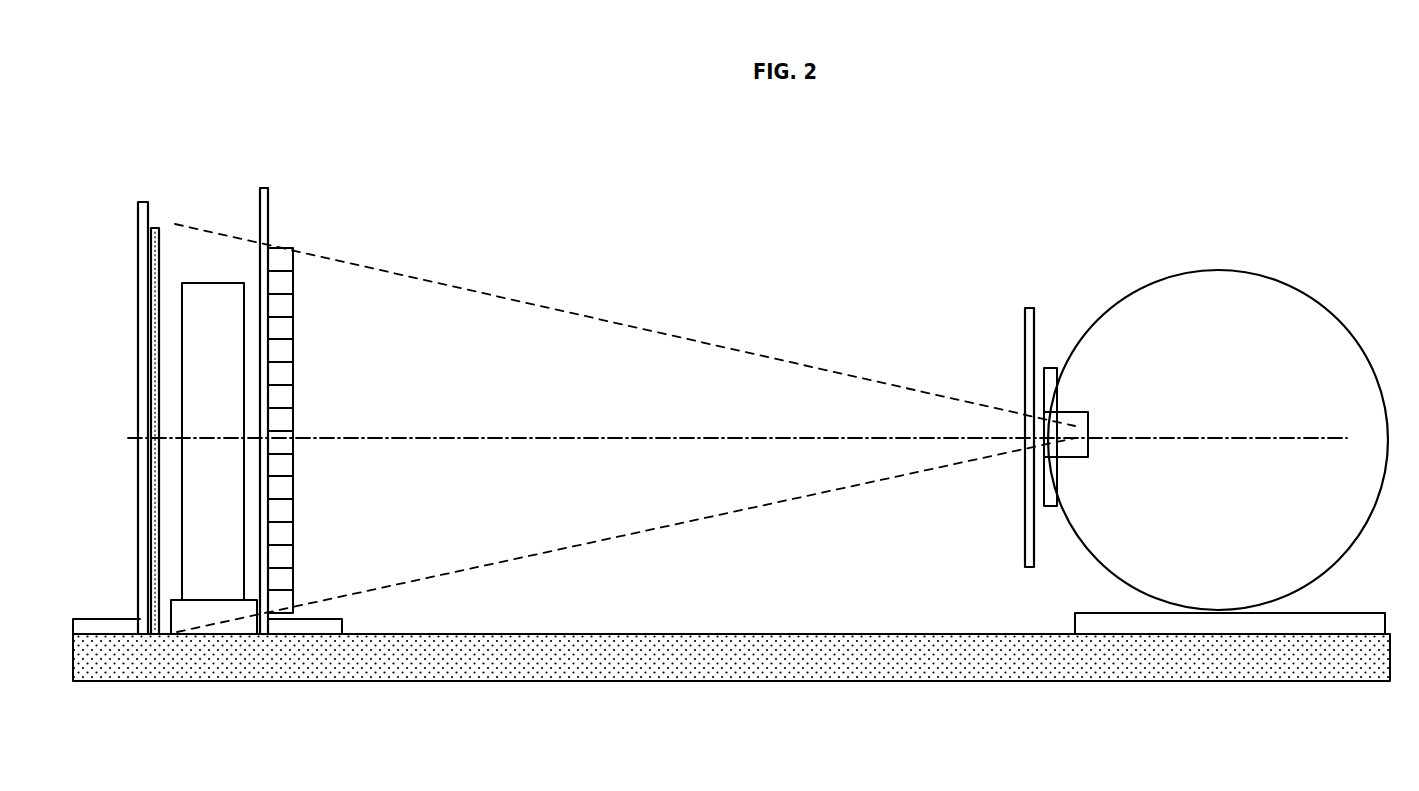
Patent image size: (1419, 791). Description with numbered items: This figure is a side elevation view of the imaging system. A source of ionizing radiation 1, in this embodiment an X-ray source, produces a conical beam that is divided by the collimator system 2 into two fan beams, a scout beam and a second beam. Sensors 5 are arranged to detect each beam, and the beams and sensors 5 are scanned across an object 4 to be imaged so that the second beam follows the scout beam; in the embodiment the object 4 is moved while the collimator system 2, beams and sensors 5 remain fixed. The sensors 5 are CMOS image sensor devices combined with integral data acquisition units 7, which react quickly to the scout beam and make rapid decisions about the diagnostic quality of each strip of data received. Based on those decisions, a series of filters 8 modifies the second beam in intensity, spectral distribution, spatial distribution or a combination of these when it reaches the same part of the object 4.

The source of ionizing radiation 1 is at (1187, 268).
The collimator system 2 is at (1027, 367).
The object 4 is at (237, 293).
The sensors 5 is at (163, 228).
The integral data acquisition unit 7 is at (142, 355).
The filters 8 is at (276, 356).